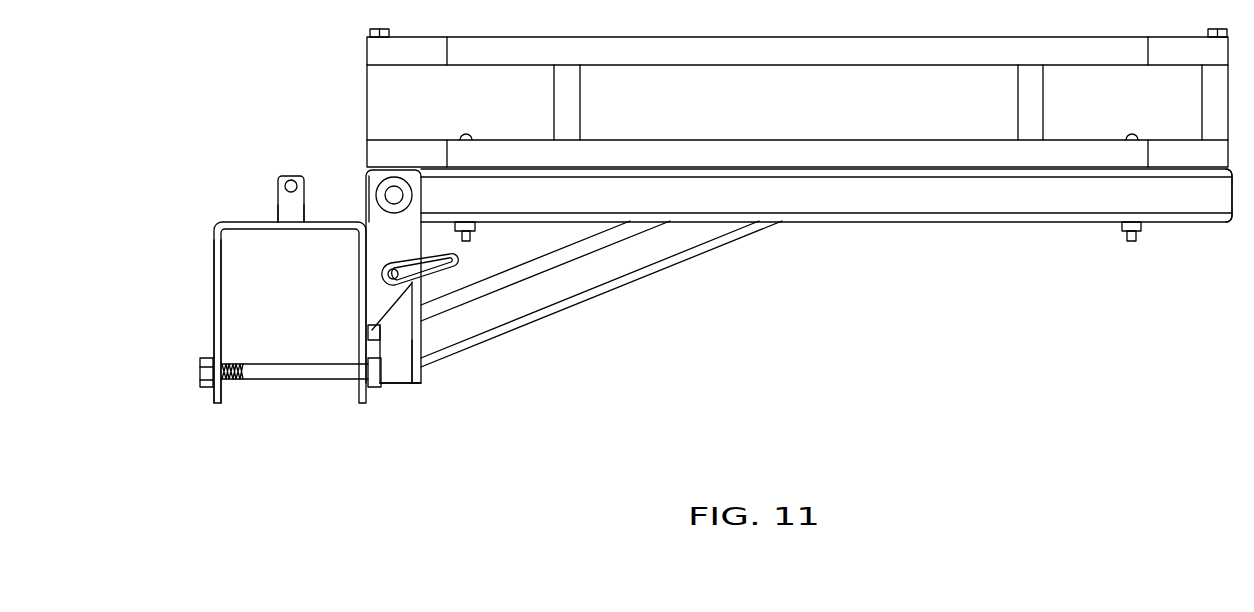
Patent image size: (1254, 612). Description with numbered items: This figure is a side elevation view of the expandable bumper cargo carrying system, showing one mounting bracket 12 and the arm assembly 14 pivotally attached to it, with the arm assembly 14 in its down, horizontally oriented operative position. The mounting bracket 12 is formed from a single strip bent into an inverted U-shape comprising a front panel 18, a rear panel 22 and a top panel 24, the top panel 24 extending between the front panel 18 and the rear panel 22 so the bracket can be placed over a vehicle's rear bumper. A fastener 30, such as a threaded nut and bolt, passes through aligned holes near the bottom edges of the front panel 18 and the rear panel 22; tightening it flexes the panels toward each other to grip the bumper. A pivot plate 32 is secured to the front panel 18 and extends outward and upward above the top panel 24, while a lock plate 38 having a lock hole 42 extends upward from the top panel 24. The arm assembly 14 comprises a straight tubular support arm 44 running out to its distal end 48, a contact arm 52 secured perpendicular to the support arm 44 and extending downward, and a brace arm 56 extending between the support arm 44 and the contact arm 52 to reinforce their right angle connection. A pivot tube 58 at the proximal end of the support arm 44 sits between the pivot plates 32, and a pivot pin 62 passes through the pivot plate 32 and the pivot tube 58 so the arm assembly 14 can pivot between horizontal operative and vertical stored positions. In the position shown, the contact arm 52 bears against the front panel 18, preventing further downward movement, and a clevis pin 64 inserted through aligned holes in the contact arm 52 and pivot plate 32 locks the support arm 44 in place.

The mounting bracket 12 is at (234, 291).
The arm assembly 14 is at (908, 265).
The front panel 18 is at (368, 342).
The rear panel 22 is at (213, 320).
The top panel 24 is at (226, 222).
The fastener 30 is at (198, 377).
The pivot plate 32 is at (383, 303).
The lock plate 38 is at (283, 201).
The lock hole 42 is at (287, 174).
The support arm 44 is at (1009, 193).
The distal end 48 is at (1222, 225).
The contact arm 52 is at (398, 372).
The brace arm 56 is at (628, 257).
The pivot tube 58 is at (394, 194).
The pivot pin 62 is at (391, 186).
The clevis pin 64 is at (466, 271).